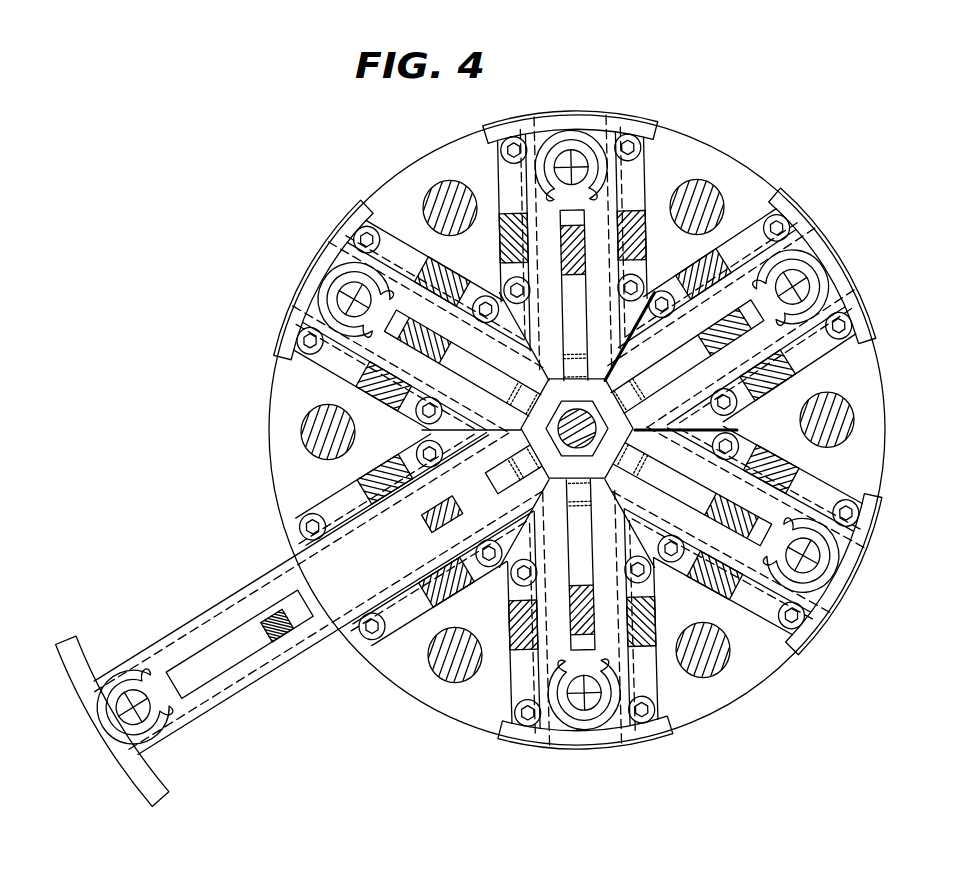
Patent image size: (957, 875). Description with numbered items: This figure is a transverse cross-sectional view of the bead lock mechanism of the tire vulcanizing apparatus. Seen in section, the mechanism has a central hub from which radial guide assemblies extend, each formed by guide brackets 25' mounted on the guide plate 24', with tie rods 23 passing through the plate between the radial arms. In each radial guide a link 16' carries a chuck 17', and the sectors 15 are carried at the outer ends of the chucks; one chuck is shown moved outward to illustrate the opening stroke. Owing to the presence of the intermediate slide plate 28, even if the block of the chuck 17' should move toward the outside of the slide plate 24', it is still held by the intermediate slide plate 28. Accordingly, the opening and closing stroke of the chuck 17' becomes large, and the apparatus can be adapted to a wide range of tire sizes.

The sectors 15 is at (107, 688).
The link 16' is at (322, 589).
The chuck 17' is at (132, 722).
The tie rods 23 is at (446, 668).
The guide plate 24' is at (577, 452).
The guide bracket 25' is at (376, 531).
The intermediate slide plate 28 is at (312, 650).